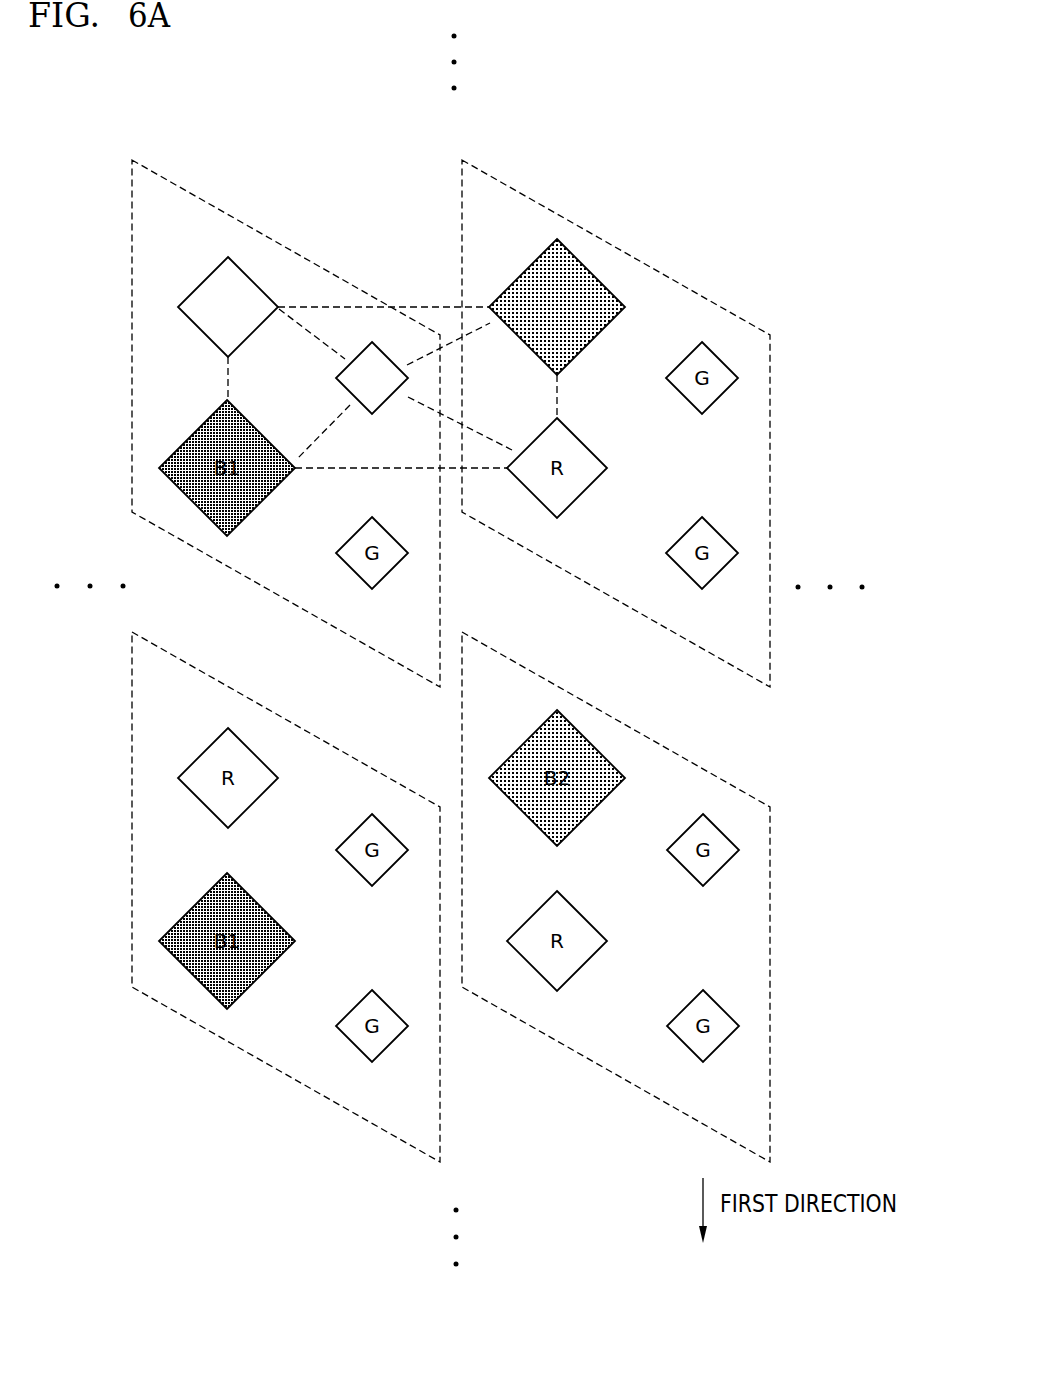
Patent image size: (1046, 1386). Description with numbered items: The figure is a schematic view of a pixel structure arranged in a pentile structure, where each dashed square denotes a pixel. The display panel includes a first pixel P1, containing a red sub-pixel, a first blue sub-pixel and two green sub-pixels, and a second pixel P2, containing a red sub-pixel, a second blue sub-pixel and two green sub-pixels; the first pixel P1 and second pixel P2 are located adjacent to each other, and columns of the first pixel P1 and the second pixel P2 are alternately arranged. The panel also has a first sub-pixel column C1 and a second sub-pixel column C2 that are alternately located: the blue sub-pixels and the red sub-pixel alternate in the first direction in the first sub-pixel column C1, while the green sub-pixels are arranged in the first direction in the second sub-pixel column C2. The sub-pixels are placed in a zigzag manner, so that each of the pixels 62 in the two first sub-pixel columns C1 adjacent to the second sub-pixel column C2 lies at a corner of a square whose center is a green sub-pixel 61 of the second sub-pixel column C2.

The sub-pixel G 61 is at (393, 362).
The pixels 62 is at (203, 280).
The first pixel P1 is at (132, 335).
The second pixel P2 is at (770, 513).
The first sub-pixel column C1 is at (228, 118).
The second sub-pixel column C2 is at (372, 118).